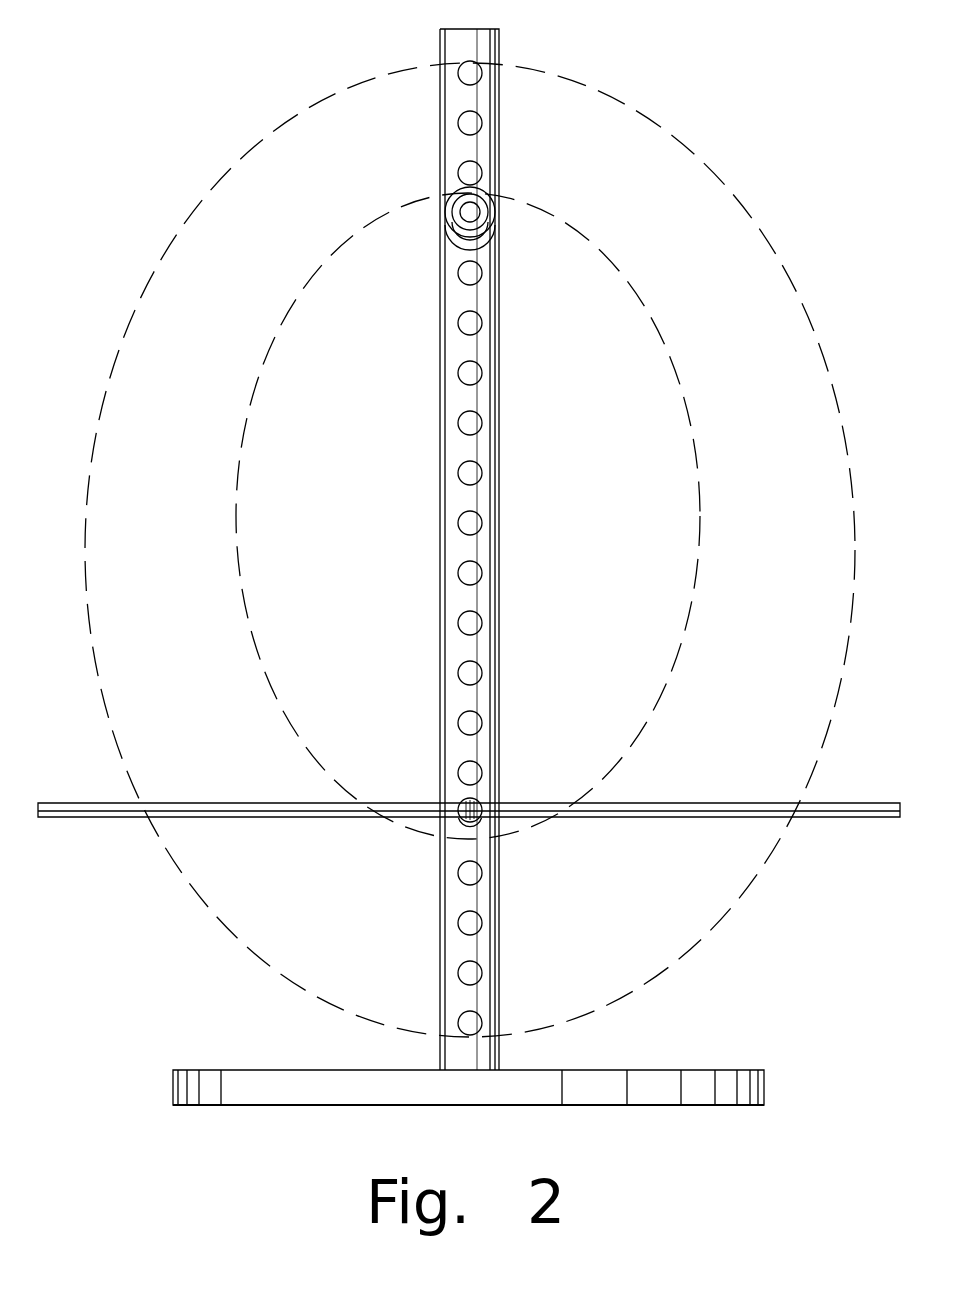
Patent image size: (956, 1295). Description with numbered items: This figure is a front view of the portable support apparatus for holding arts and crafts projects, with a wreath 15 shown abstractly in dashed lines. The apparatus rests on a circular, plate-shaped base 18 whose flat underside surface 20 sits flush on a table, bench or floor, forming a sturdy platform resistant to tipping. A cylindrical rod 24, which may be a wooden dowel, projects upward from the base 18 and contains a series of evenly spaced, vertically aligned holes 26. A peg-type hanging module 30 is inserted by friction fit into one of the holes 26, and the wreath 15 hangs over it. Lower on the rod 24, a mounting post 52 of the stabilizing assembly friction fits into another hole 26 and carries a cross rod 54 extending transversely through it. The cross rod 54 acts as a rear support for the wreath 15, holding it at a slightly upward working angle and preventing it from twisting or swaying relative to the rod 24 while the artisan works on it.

The wreath 15 is at (722, 200).
The base 18 is at (758, 1085).
The underside surface 20 is at (697, 1106).
The cylindrical rod 24 is at (476, 446).
The holes 26 is at (468, 375).
The hanging module 30 is at (498, 210).
The mounting post 52 is at (478, 801).
The cross rod 54 is at (90, 812).